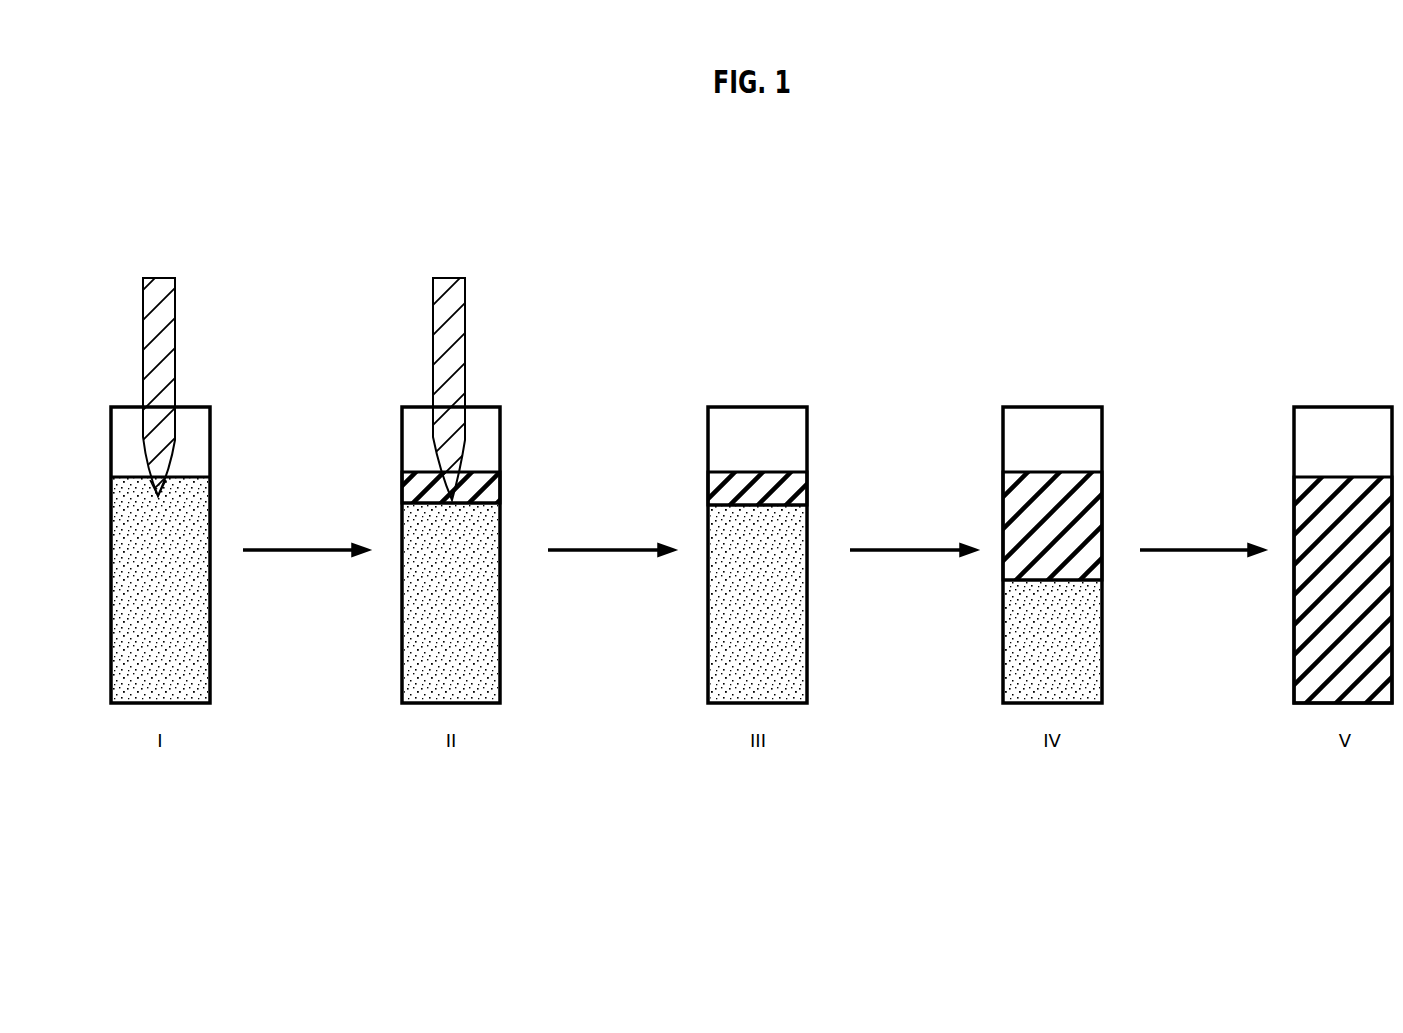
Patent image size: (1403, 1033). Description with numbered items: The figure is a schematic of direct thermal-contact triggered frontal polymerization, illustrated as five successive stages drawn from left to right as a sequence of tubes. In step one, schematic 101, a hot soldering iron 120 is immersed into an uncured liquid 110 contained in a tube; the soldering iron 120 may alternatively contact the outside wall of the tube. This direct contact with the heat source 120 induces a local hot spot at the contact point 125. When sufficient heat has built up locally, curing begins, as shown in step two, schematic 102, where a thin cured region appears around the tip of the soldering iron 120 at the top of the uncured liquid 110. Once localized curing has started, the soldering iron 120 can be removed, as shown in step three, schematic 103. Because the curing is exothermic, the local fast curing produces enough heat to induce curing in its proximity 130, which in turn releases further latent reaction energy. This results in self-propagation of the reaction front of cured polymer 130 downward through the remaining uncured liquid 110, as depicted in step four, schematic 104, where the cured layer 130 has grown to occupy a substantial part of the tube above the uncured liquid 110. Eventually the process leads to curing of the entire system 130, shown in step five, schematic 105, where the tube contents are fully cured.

The schematic of step I 101 is at (130, 243).
The schematic of step II 102 is at (430, 243).
The schematic of step III 103 is at (731, 381).
The schematic of step IV 104 is at (1031, 381).
The schematic of step V 105 is at (1312, 381).
The uncured liquid 110 is at (210, 603).
The soldering iron 120 is at (433, 350).
The contact point 125 is at (172, 497).
The cured polymer 130 is at (708, 496).